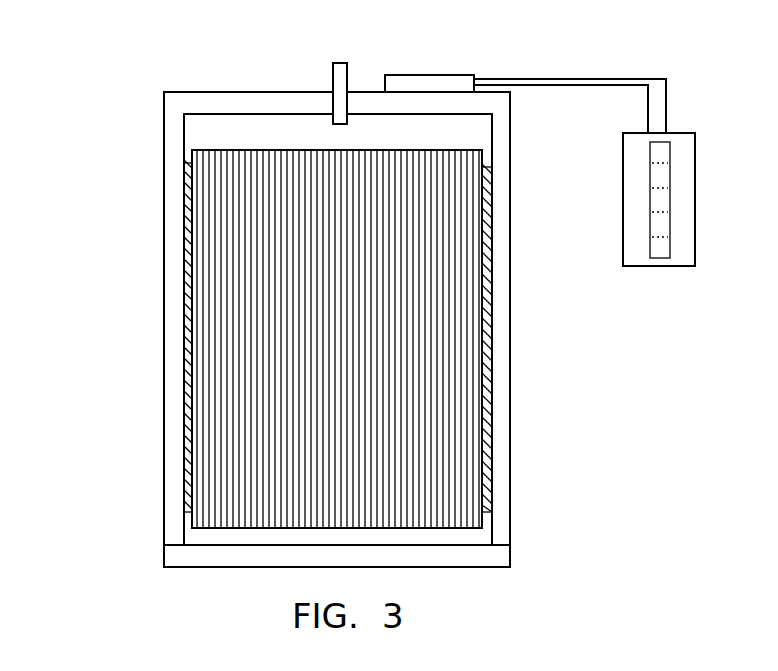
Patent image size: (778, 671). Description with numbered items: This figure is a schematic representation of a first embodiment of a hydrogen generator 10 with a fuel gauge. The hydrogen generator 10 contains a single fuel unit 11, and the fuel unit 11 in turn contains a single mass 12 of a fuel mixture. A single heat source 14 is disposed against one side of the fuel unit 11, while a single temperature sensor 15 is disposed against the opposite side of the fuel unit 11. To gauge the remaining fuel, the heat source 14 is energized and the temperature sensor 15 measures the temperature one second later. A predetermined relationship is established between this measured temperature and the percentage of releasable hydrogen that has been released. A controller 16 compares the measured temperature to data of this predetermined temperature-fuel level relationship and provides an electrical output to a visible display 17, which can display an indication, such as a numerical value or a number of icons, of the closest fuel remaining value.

The hydrogen generator 10 is at (138, 67).
The fuel unit 11 is at (217, 148).
The mass of fuel mixture 12 is at (327, 342).
The heat source 14 is at (183, 372).
The temperature sensor 15 is at (492, 369).
The controller 16 is at (415, 75).
The visible display 17 is at (675, 133).